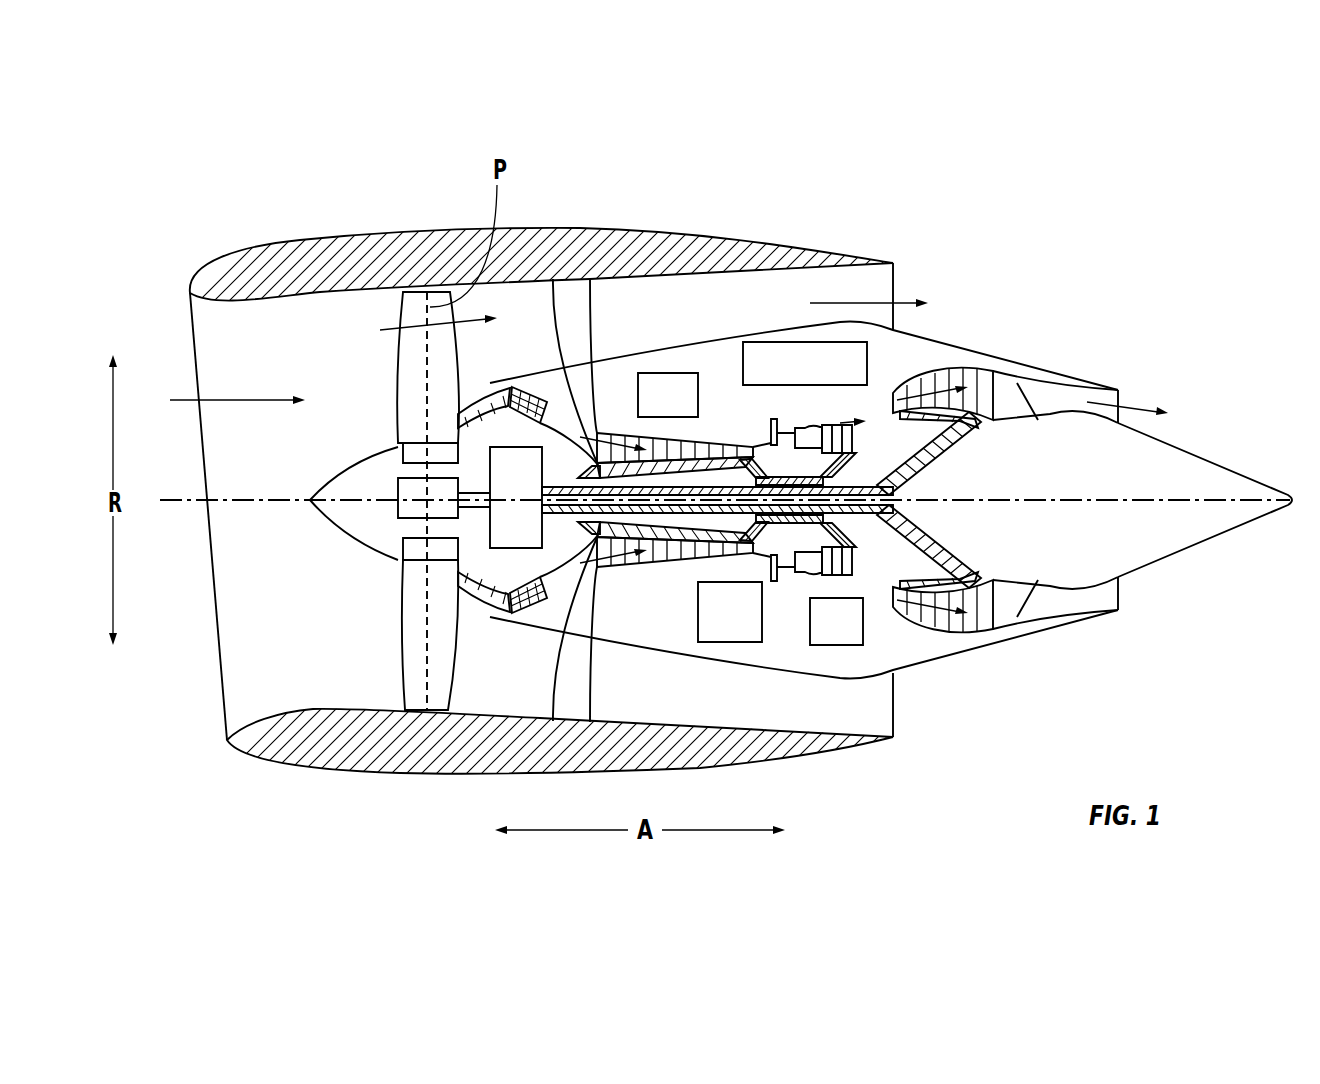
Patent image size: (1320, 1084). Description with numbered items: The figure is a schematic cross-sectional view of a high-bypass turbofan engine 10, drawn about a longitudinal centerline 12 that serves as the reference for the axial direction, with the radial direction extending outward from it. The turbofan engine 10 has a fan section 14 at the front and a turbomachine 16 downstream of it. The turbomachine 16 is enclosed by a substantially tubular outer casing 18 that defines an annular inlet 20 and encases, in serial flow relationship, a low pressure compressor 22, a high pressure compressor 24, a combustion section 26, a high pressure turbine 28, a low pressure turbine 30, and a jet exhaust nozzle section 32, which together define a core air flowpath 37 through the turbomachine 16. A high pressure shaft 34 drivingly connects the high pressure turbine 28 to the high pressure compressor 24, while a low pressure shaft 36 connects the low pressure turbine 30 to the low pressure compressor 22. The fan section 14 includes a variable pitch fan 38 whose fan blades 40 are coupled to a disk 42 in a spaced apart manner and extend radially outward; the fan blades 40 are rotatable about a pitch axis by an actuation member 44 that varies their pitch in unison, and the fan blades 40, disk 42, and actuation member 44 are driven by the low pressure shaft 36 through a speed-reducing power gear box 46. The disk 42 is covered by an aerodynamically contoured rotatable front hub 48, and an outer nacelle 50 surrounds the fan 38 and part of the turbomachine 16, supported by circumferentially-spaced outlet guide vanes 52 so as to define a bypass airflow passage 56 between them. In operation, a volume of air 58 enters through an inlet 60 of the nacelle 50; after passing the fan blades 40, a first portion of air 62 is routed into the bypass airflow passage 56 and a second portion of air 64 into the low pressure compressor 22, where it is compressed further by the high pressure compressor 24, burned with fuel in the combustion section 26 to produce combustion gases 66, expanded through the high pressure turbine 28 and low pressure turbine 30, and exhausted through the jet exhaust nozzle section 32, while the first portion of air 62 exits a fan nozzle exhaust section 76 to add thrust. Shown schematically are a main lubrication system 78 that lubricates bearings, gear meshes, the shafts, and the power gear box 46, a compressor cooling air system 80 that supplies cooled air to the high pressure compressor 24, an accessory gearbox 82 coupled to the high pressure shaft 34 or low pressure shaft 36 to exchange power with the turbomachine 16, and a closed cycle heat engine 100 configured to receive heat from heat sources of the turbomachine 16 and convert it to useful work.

The turbofan engine 10 is at (1035, 242).
The longitudinal centerline 12 is at (1060, 497).
The fan section 14 is at (360, 320).
The turbomachine 16 is at (712, 388).
The outer casing 18 is at (752, 660).
The annular inlet 20 is at (500, 606).
The low pressure compressor 22 is at (563, 580).
The high pressure compressor 24 is at (622, 556).
The combustion section 26 is at (793, 570).
The high pressure turbine 28 is at (862, 573).
The low pressure turbine 30 is at (977, 622).
The jet exhaust nozzle section 32 is at (1035, 605).
The high pressure shaft 34 is at (830, 460).
The low pressure shaft 36 is at (930, 458).
The core air flowpath 37 is at (580, 560).
The variable pitch fan 38 is at (367, 553).
The fan blades 40 is at (398, 650).
The disk 42 is at (417, 453).
The actuation member 44 is at (417, 483).
The power gear box 46 is at (527, 477).
The front hub 48 is at (323, 518).
The outer nacelle 50 is at (450, 775).
The outlet guide vanes 52 is at (593, 308).
The bypass airflow passage 56 is at (726, 315).
The volume of air 58 is at (240, 397).
The inlet 60 is at (223, 712).
The first portion of air 62 is at (417, 327).
The second portion of air 64 is at (483, 385).
The combustion gases 66 is at (937, 368).
The fan nozzle exhaust section 76 is at (880, 287).
The main lubrication system 78 is at (823, 637).
The compressor cooling air system 80 is at (718, 627).
The accessory gearbox 82 is at (656, 410).
The closed cycle heat engine 100 is at (787, 379).